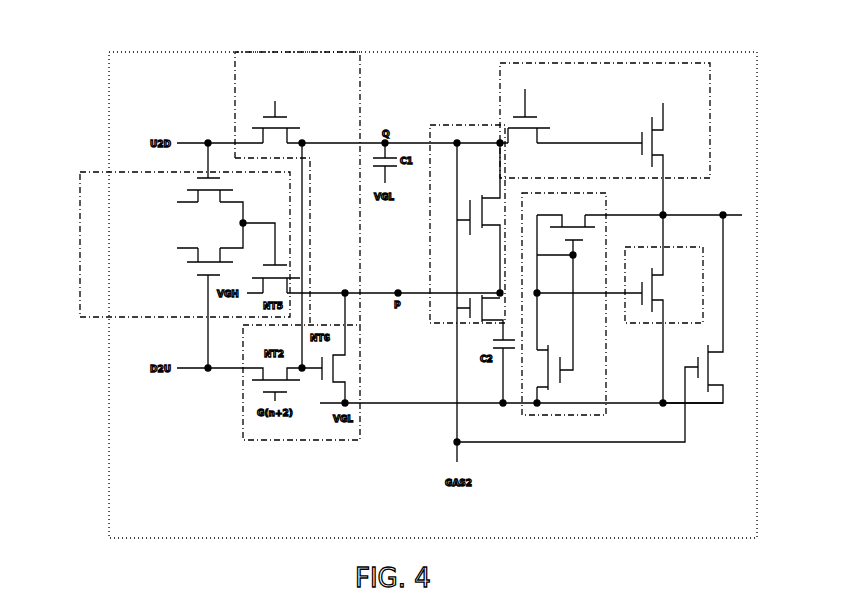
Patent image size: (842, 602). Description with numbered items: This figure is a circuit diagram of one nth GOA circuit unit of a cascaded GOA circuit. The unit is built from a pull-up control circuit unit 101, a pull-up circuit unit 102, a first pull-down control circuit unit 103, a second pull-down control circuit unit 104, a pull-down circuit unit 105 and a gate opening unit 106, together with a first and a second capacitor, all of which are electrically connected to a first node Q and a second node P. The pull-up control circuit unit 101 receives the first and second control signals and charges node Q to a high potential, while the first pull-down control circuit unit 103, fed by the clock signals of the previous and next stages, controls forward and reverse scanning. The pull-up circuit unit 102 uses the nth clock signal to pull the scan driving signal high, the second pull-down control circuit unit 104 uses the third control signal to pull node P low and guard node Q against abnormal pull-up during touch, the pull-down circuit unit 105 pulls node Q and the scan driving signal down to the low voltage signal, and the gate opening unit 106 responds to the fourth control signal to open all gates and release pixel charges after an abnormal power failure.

The pull-up control circuit unit 101 is at (262, 63).
The pull-up circuit unit 102 is at (583, 67).
The first pull-down control circuit unit 103 is at (95, 190).
The second pull-down control circuit unit 104 is at (443, 318).
The pull-down circuit unit 105 is at (678, 308).
The gate opening unit 106 is at (595, 392).